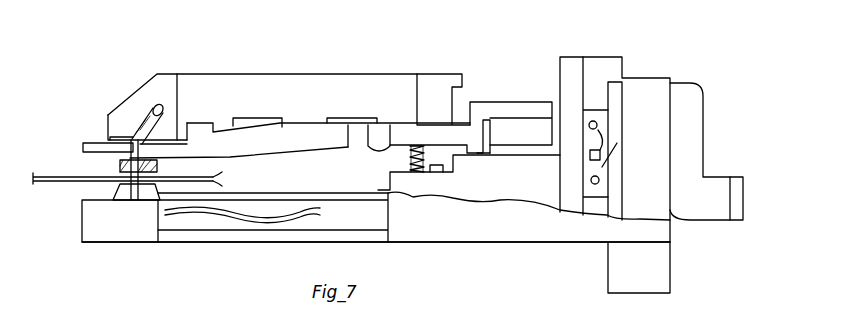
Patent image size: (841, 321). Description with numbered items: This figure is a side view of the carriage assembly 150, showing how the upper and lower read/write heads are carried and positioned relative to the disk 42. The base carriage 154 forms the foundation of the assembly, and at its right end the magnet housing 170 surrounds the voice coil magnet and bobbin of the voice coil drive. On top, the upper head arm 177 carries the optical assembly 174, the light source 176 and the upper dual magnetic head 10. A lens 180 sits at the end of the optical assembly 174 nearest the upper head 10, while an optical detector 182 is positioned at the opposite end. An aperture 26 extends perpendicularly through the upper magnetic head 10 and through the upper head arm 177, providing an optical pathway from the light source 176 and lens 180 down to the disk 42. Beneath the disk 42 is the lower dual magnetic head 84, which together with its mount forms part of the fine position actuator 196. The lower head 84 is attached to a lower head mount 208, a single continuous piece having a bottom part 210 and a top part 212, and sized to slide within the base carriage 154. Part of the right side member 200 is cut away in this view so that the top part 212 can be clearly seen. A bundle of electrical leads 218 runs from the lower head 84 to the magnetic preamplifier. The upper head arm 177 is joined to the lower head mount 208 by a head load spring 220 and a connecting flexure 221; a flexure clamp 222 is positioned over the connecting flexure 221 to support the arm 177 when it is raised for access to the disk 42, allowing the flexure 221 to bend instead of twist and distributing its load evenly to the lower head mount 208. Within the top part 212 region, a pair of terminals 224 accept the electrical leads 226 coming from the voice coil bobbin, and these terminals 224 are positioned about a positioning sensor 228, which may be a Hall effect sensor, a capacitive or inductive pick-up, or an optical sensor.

The upper dual magnetic head 10 is at (110, 167).
The aperture 26 is at (143, 157).
The disk 42 is at (212, 181).
The lower dual magnetic head 84 is at (110, 193).
The carriage assembly 150 is at (116, 245).
The base carriage 154 is at (509, 244).
The magnet housing 170 is at (703, 107).
The optical assembly 174 is at (258, 73).
The light source 176 is at (113, 131).
The upper head arm 177 is at (292, 130).
The lens 180 is at (100, 147).
The optical detector 182 is at (437, 73).
The fine position actuator 196 is at (253, 151).
The right side member 200 is at (525, 230).
The lower head mount 208 is at (568, 56).
The bottom part 210 is at (373, 224).
The top part 212 is at (563, 70).
The bundle of electrical leads 218 is at (270, 218).
The head load spring 220 is at (408, 158).
The connecting flexure 221 is at (512, 144).
The flexure clamp 222 is at (485, 102).
The terminals 224 is at (598, 122).
The electrical leads 226 is at (612, 152).
The positioning sensor 228 is at (588, 154).